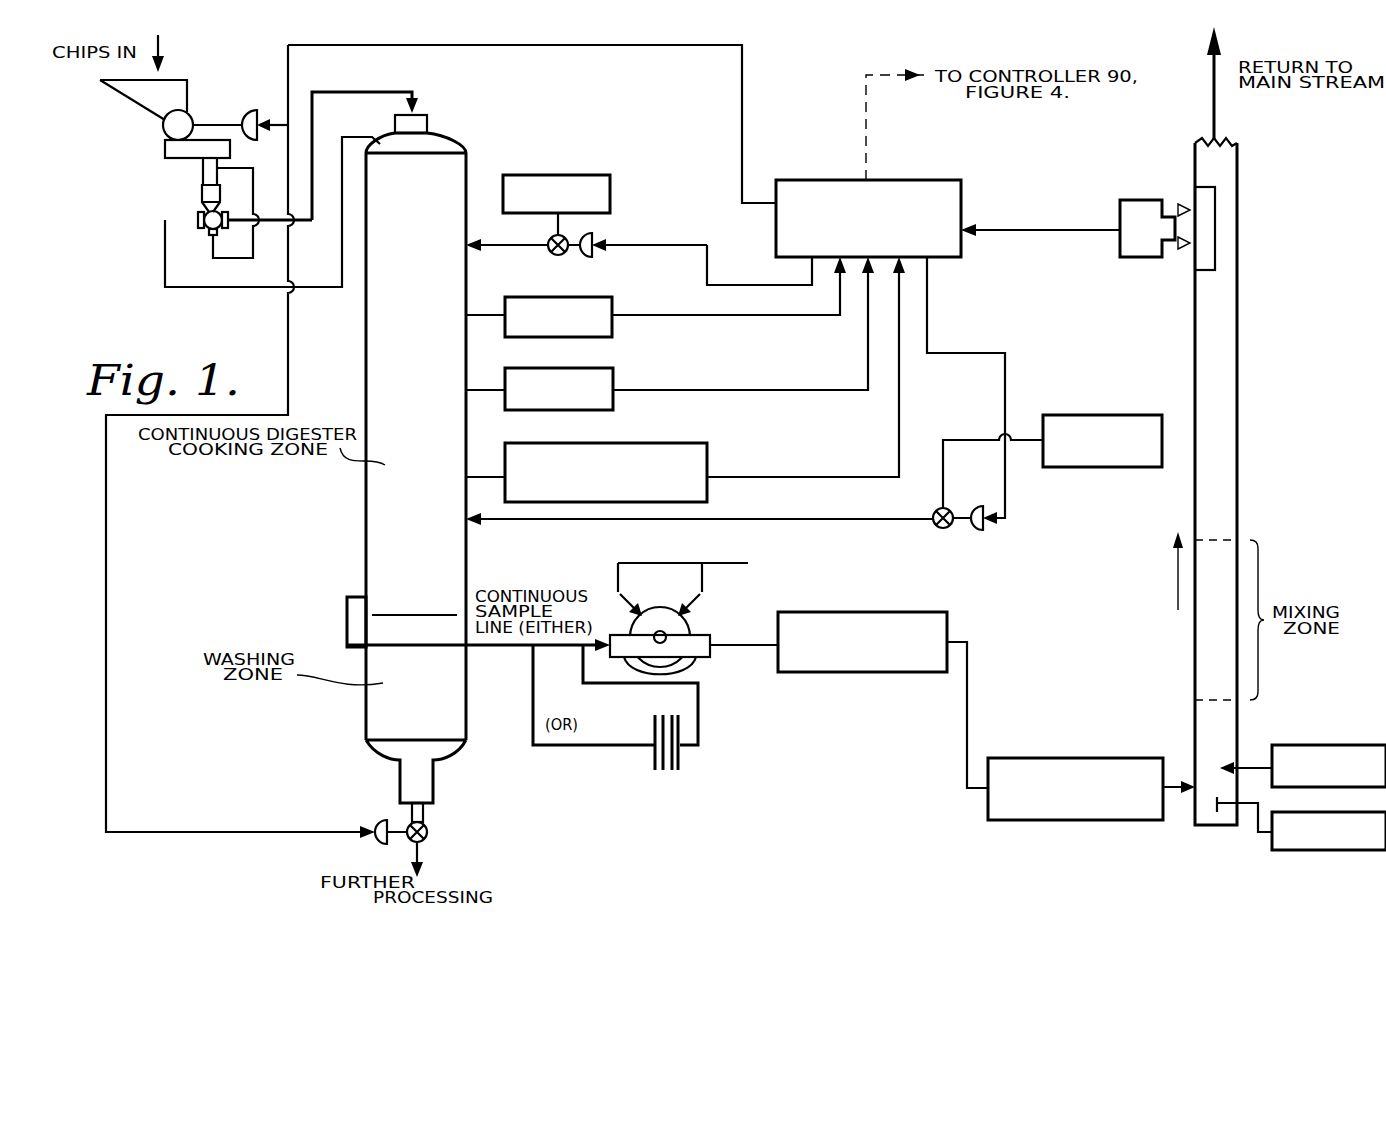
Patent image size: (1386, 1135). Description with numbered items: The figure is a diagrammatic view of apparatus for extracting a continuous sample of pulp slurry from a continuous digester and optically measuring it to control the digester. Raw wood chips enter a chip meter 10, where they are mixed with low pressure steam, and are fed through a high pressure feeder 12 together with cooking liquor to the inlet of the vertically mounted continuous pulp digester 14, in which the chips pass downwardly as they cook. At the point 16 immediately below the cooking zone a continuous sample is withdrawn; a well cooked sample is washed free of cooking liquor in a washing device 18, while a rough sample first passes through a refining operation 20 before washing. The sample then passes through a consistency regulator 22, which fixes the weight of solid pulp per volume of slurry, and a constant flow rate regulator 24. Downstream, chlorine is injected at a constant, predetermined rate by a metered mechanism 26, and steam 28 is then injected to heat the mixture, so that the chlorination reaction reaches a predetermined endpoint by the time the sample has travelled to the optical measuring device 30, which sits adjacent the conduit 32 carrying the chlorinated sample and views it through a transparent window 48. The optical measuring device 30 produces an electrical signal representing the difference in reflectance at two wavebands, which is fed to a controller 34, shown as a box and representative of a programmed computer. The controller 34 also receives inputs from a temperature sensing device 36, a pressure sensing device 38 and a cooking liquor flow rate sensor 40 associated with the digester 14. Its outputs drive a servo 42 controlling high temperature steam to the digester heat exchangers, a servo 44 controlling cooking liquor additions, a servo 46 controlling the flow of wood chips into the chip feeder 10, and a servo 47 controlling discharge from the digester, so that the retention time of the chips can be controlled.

The chip meter 10 is at (165, 150).
The high pressure feeder 12 is at (198, 218).
The continuous pulp digester 14 is at (368, 527).
The sample withdrawal point 16 is at (365, 597).
The washing device 18 is at (690, 665).
The refining operation 20 is at (685, 758).
The consistency regulator 22 is at (914, 612).
The constant flow rate regulator 24 is at (1128, 758).
The chlorine metered mechanism 26 is at (1325, 850).
The steam injection 28 is at (1345, 745).
The optical measuring device 30 is at (1146, 185).
The conduit 32 is at (1238, 405).
The controller 34 is at (940, 180).
The temperature sensing device 36 is at (585, 297).
The pressure sensing device 38 is at (595, 368).
The cooking liquor flow rate sensor 40 is at (595, 443).
The high temperature steam servo 42 is at (586, 233).
The cooking liquor servo 44 is at (978, 531).
The chip flow servo 46 is at (245, 110).
The discharge servo 47 is at (385, 820).
The transparent window 48 is at (1198, 262).